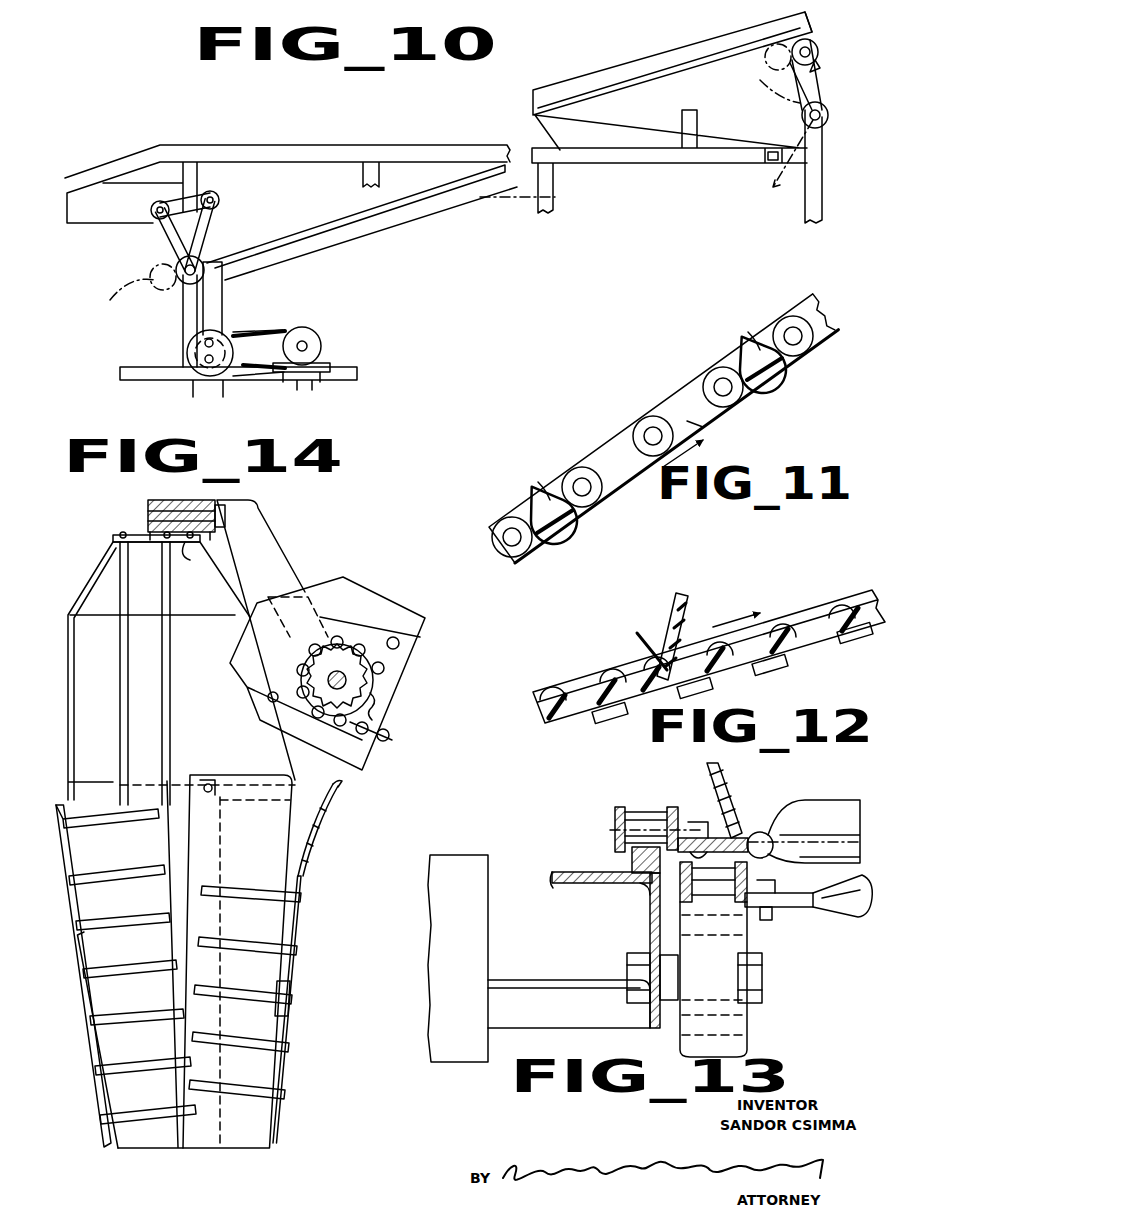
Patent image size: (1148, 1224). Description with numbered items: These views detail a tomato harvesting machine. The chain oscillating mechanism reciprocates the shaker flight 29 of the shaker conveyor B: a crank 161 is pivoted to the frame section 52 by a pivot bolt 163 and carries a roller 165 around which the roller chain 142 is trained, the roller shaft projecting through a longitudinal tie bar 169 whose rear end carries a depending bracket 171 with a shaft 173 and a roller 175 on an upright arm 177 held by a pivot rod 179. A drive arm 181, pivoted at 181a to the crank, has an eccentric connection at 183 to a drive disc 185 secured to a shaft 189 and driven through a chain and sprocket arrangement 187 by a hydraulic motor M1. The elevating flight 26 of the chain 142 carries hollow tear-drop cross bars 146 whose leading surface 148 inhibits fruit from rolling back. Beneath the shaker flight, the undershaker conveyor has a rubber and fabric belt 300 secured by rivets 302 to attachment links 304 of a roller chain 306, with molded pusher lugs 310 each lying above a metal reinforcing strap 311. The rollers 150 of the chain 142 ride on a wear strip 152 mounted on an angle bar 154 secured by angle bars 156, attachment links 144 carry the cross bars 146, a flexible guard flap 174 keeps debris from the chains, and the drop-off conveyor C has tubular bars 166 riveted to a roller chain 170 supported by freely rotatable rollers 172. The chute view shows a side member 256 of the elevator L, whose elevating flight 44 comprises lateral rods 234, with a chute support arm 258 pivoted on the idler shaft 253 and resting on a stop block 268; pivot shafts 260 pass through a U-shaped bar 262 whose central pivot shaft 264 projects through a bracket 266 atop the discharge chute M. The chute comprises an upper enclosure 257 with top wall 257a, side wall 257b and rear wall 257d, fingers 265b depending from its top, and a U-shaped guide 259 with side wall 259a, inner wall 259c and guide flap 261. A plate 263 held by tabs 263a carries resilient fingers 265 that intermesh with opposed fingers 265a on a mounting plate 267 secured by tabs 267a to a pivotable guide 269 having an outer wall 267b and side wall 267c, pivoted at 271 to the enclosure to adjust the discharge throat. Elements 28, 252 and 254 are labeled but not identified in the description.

In FIG. 10, the frame section 52 is at (224, 140).
In FIG. 13, the frame section 52 is at (465, 853).
In FIG. 10, the rail 28 is at (163, 198).
In FIG. 10, the shaker flight 29 is at (535, 117).
In FIG. 10, the crank 161 is at (208, 195).
In FIG. 10, the pivot bolt 163 is at (152, 207).
In FIG. 10, the pivot 181a is at (220, 200).
In FIG. 10, the longitudinal tie bar 169 is at (380, 213).
In FIG. 10, the roller 165 is at (160, 290).
In FIG. 10, the drive arm 181 is at (225, 283).
In FIG. 10, the eccentric connection 183 is at (213, 340).
In FIG. 10, the chain and sprocket arrangement 187 is at (265, 340).
In FIG. 10, the hydraulic motor M1 is at (322, 343).
In FIG. 10, the drive disc 185 is at (187, 350).
In FIG. 10, the shaft 189 is at (205, 362).
In FIG. 10, the depending bracket 171 is at (813, 34).
In FIG. 10, the roller 175 is at (819, 52).
In FIG. 10, the shaft 173 is at (824, 72).
In FIG. 10, the upright arm 177 is at (797, 97).
In FIG. 10, the pivot rod 179 is at (800, 115).
In FIG. 11, the leading surface 148 is at (757, 335).
In FIG. 11, the hollow cross bars 146 is at (782, 386).
In FIG. 13, the hollow cross bars 146 is at (843, 839).
In FIG. 11, the elevating flight 26 is at (627, 427).
In FIG. 11, the endless roller chain 142 is at (700, 425).
In FIG. 13, the endless roller chain 142 is at (614, 818).
In FIG. 12, the pusher lugs 310 is at (689, 602).
In FIG. 12, the roller chain 306 is at (797, 614).
In FIG. 12, the metal reinforcing strap 311 is at (635, 646).
In FIG. 12, the endless rubber and fabric belt 300 is at (570, 698).
In FIG. 12, the chain attachment links 304 is at (852, 642).
In FIG. 12, the rivets 302 is at (695, 694).
In FIG. 13, the rollers 150 is at (637, 818).
In FIG. 13, the attachment links 144 is at (683, 828).
In FIG. 13, the flexible guard flap 174 is at (722, 793).
In FIG. 13, the shaker conveyor B is at (822, 797).
In FIG. 13, the wear strip 152 is at (631, 860).
In FIG. 13, the angle bar 154 is at (553, 882).
In FIG. 13, the endless roller chain 170 is at (722, 885).
In FIG. 13, the freely rotatable rollers 172 is at (728, 981).
In FIG. 13, the angle bars 156 is at (580, 1021).
In FIG. 13, the drop-off conveyor C is at (817, 911).
In FIG. 13, the lateral tubular bars 166 is at (855, 903).
In FIG. 14, the central pivot shaft 264 is at (147, 512).
In FIG. 14, the discharge chute M is at (92, 552).
In FIG. 14, the bracket 266 is at (140, 537).
In FIG. 14, the pivot shafts 260 is at (187, 500).
In FIG. 14, the U-shaped bar 262 is at (252, 503).
In FIG. 14, the chute support arm 258 is at (258, 523).
In FIG. 14, the top wall 257a is at (190, 547).
In FIG. 14, the elevator L is at (376, 587).
In FIG. 14, the side member 256 is at (328, 592).
In FIG. 14, the stop block 268 is at (240, 618).
In FIG. 14, the plate 254 is at (394, 640).
In FIG. 14, the resilient fingers 265b is at (125, 642).
In FIG. 14, the side wall 257b is at (230, 685).
In FIG. 14, the rear wall 257d is at (72, 690).
In FIG. 14, the upper enclosure 257 is at (78, 600).
In FIG. 14, the elevating flight 44 is at (393, 665).
In FIG. 14, the tooth 252 is at (358, 673).
In FIG. 14, the idler shaft 253 is at (370, 695).
In FIG. 14, the lateral rods 234 is at (385, 742).
In FIG. 14, the pivot connection 271 is at (208, 784).
In FIG. 14, the tabs 267a is at (74, 823).
In FIG. 14, the side wall 259a is at (290, 849).
In FIG. 14, the resilient guide flap 261 is at (312, 816).
In FIG. 14, the side wall 267c is at (180, 851).
In FIG. 14, the tabs 263a is at (298, 872).
In FIG. 14, the removably attached plate 263 is at (303, 918).
In FIG. 14, the resilient flexible fingers 265 is at (248, 907).
In FIG. 14, the resilient fingers 265a is at (99, 934).
In FIG. 14, the inner wall 259c is at (274, 967).
In FIG. 14, the outer wall 267b is at (76, 1013).
In FIG. 14, the mounting plate 267 is at (88, 1064).
In FIG. 14, the pivotable U-shaped guide 269 is at (146, 1136).
In FIG. 14, the U-shaped guide 259 is at (239, 1145).